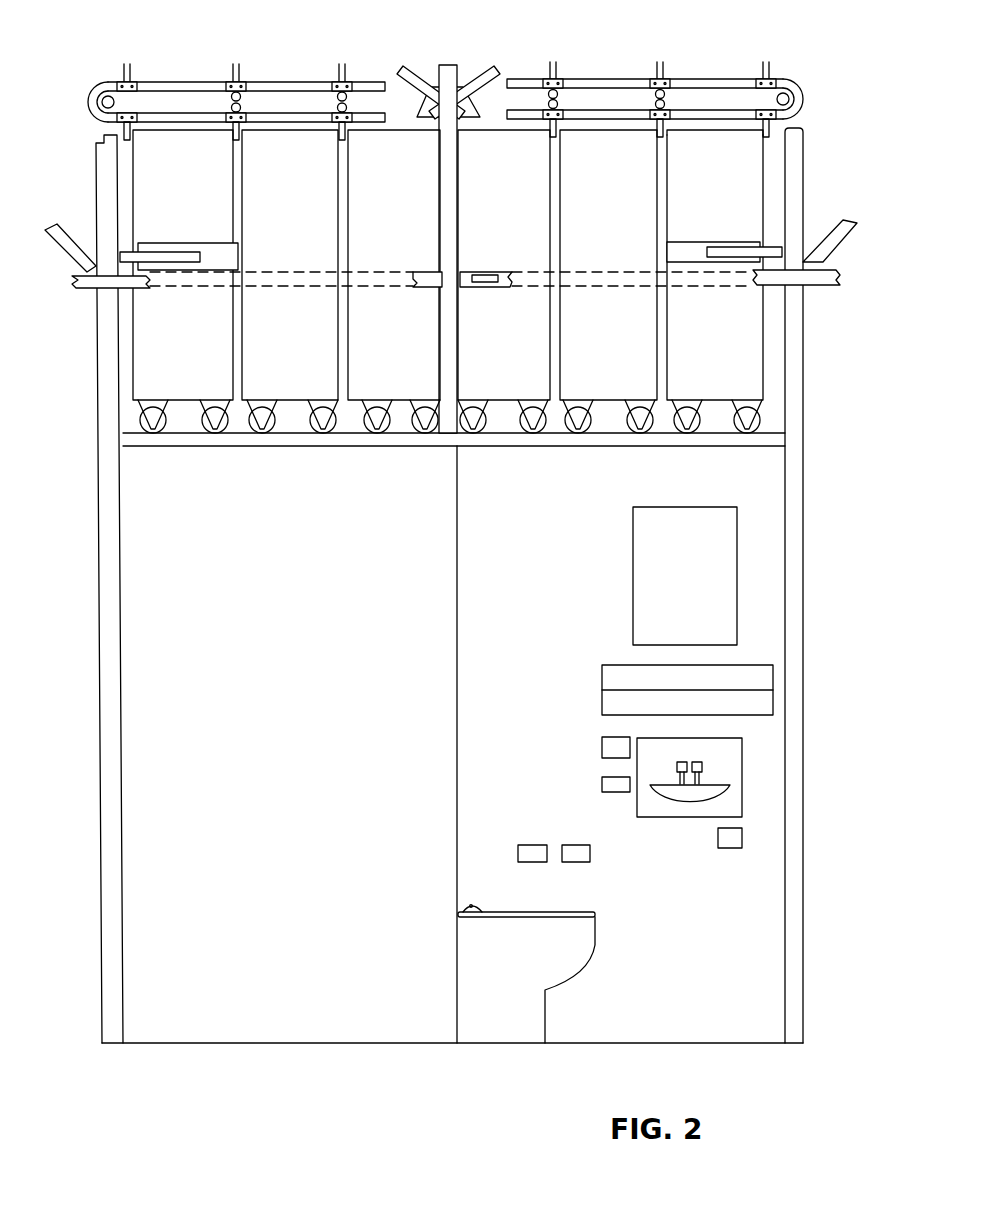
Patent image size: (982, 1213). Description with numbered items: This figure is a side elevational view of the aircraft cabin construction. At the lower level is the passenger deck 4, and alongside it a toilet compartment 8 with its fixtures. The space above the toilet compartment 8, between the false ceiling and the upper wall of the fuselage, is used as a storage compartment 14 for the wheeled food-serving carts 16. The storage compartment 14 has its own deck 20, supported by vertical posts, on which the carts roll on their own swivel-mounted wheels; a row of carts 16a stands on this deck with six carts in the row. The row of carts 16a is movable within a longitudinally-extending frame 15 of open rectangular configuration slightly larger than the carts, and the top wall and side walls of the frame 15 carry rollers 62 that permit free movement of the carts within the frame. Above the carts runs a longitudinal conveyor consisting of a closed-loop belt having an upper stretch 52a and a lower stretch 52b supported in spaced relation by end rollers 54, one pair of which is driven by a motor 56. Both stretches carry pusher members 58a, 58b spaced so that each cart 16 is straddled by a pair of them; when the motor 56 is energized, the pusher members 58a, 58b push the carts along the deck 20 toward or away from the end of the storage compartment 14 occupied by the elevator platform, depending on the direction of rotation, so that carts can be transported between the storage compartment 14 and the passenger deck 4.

The passenger deck 4 is at (270, 1043).
The toilet compartment 8 is at (772, 518).
The storage compartment 14 is at (773, 197).
The frame 15 is at (430, 127).
The food-serving cart 16 is at (755, 337).
The row of carts 16a is at (747, 147).
The deck 20 is at (773, 438).
The upper stretch 52a is at (200, 87).
The lower stretch 52b is at (168, 118).
The end roller 54 is at (250, 82).
The motor 56 is at (100, 94).
The pusher member 58a is at (238, 66).
The pusher member 58b is at (240, 133).
The roller 62 is at (483, 283).